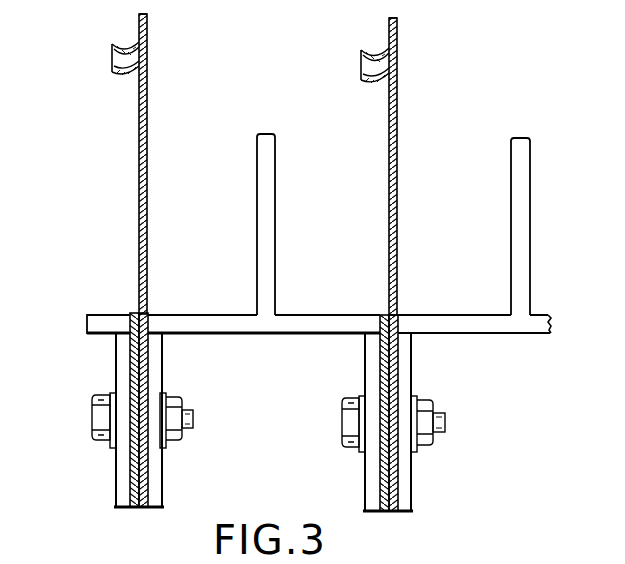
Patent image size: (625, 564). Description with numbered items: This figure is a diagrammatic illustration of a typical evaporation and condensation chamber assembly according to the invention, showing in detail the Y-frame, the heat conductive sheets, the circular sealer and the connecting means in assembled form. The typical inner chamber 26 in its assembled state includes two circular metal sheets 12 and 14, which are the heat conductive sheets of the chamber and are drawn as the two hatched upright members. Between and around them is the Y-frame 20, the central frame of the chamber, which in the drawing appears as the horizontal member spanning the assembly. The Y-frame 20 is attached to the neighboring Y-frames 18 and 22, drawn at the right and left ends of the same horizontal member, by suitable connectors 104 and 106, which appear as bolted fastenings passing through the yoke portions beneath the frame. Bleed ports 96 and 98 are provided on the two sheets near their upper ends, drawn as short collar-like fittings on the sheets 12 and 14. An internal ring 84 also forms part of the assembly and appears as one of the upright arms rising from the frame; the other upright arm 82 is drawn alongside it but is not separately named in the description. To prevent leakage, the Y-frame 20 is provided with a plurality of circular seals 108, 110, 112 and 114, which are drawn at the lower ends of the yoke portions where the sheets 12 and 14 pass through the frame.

The circular metal sheet 12 is at (398, 30).
The circular metal sheet 14 is at (139, 30).
The neighboring Y-frame 18 is at (476, 335).
The Y-frame 20 is at (233, 334).
The neighboring Y-frame 22 is at (98, 336).
The inner chamber 26 is at (283, 75).
The right upright arm 82 is at (531, 240).
The internal ring 84 is at (276, 232).
The bleed port 96 is at (380, 79).
The bleed port 98 is at (120, 72).
The connector 104 is at (170, 443).
The connector 106 is at (425, 448).
The circular seal 108 is at (130, 507).
The circular seal 110 is at (140, 508).
The circular seal 112 is at (384, 512).
The circular seal 114 is at (397, 512).